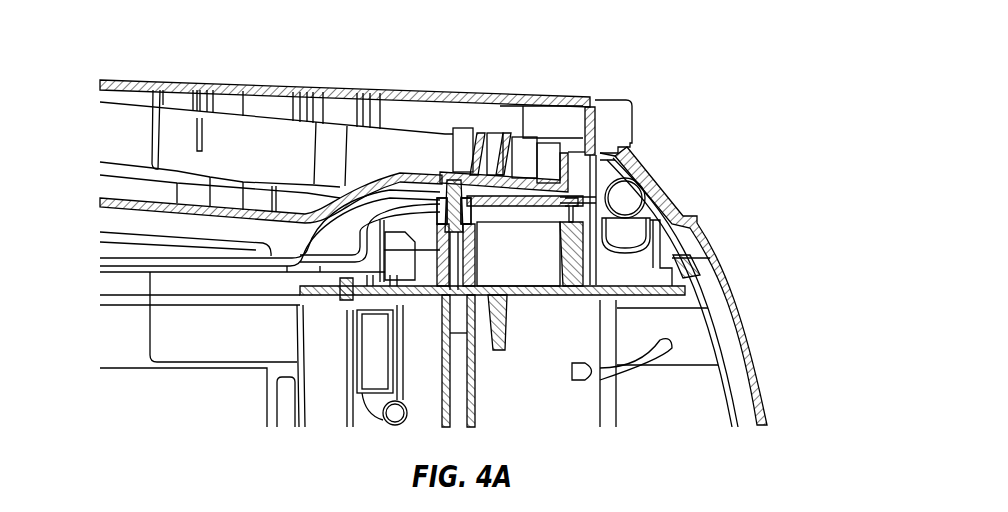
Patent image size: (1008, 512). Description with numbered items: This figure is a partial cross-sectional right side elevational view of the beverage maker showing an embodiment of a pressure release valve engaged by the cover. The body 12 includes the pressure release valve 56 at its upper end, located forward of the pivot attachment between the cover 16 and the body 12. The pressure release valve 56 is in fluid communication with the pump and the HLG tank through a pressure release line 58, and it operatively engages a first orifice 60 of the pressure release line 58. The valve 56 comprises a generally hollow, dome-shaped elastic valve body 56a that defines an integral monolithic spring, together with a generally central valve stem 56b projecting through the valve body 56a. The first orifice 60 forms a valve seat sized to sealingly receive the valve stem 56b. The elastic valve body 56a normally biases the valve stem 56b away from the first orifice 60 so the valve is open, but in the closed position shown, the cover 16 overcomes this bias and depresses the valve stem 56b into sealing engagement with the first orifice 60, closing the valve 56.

The body 12 is at (762, 395).
The cover 16 is at (229, 80).
The pressure release valve 56 is at (437, 188).
The elastic valve body 56a is at (466, 196).
The valve stem 56b is at (438, 200).
The pressure release line 58 is at (460, 390).
The first orifice 60 is at (507, 292).